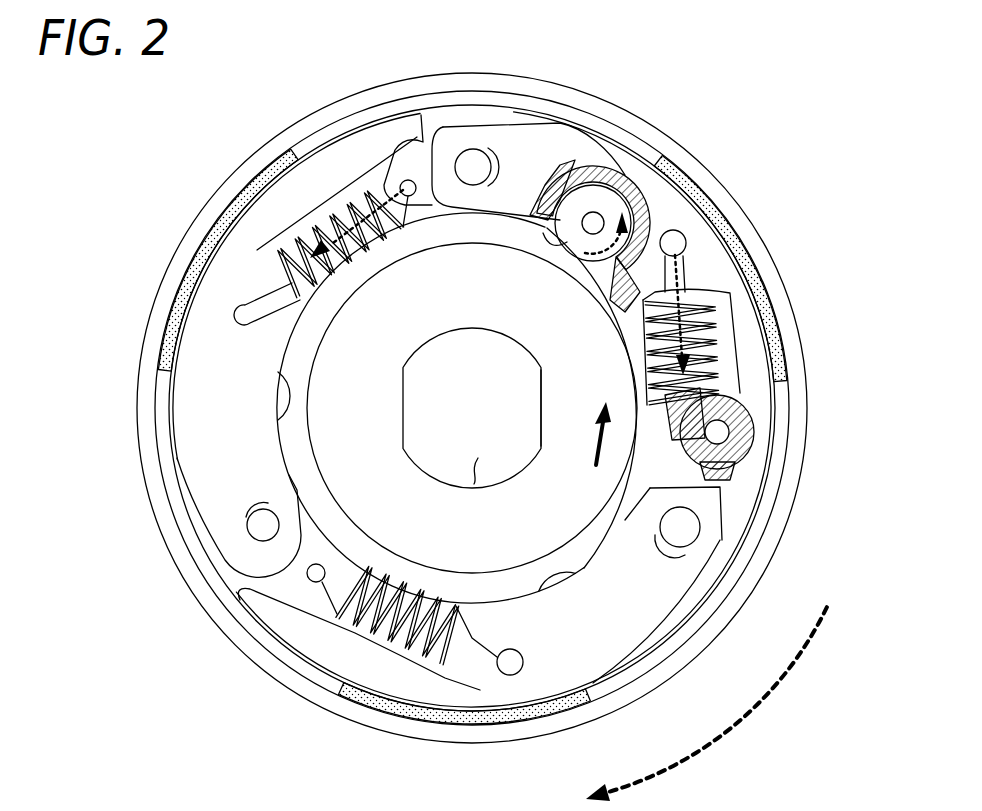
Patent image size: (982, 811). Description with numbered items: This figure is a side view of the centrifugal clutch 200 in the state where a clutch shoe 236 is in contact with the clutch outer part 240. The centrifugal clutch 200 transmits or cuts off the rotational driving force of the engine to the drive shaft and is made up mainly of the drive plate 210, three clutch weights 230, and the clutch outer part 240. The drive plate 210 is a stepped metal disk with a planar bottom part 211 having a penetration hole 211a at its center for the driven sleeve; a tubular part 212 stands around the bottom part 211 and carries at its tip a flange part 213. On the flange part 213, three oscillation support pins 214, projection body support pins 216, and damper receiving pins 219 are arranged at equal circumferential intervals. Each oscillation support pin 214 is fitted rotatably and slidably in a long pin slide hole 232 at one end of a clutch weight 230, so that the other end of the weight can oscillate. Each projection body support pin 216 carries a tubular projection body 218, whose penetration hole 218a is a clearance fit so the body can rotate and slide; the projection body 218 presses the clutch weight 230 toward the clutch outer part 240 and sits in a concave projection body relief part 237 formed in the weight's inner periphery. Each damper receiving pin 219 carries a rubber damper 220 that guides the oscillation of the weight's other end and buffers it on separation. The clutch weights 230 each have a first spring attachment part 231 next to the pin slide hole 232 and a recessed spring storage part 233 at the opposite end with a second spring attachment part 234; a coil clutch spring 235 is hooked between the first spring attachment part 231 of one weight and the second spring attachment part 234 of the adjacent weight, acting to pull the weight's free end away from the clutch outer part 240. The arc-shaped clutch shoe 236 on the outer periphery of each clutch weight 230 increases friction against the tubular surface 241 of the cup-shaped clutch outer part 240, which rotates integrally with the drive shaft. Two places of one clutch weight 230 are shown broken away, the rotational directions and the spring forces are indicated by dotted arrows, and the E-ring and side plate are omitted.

The centrifugal clutch 200 is at (158, 124).
The drive plate 210 is at (408, 373).
The bottom part 211 is at (553, 412).
The penetration hole 211a is at (473, 458).
The tubular part 212 is at (328, 478).
The flange part 213 is at (740, 523).
The oscillation support pin 214 is at (488, 150).
The projection body support pin 216 is at (566, 190).
The projection body 218 is at (292, 393).
The penetration hole 218a is at (645, 195).
The damper receiving pin 219 is at (748, 454).
The damper 220 is at (733, 480).
The clutch weight 230 is at (217, 513).
The first spring attachment part 231 is at (423, 143).
The pin slide hole 232 is at (240, 560).
The spring storage part 233 is at (335, 660).
The second spring attachment part 234 is at (684, 233).
The clutch spring 235 is at (722, 292).
The clutch shoe 236 is at (157, 376).
The projection body relief part 237 is at (598, 220).
The clutch outer part 240 is at (480, 743).
The tubular surface 241 is at (778, 395).